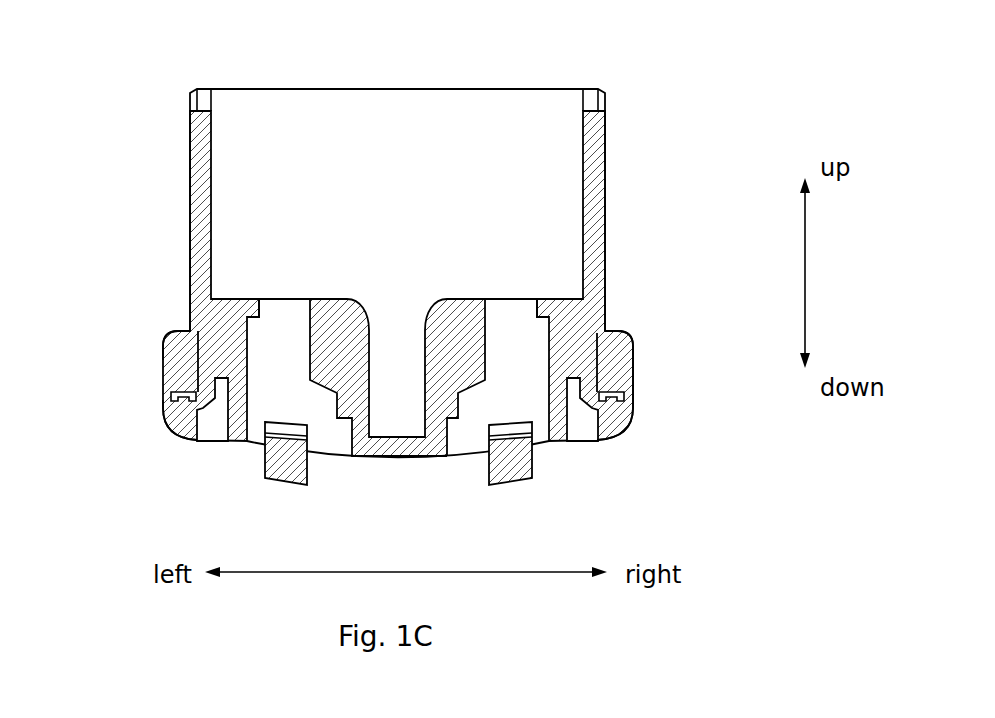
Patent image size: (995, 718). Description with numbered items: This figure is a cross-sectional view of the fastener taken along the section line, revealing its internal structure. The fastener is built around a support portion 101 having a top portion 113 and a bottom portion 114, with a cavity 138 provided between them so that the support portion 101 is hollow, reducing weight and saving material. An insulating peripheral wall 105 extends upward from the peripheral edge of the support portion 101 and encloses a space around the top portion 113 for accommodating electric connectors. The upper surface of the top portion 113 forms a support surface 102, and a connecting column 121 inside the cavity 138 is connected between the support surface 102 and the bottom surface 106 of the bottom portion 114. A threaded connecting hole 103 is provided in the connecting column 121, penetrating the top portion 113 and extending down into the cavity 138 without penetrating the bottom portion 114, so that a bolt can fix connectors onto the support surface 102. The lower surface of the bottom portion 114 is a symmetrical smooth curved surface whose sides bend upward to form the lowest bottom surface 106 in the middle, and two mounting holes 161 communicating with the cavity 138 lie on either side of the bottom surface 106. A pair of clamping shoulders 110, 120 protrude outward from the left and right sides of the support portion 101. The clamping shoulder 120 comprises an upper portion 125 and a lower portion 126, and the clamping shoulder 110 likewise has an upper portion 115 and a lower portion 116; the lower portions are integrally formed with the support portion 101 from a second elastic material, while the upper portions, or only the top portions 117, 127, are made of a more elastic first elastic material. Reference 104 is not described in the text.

The insulating peripheral wall 105 is at (374, 120).
The support portion 101 is at (217, 362).
The support surface 102 is at (245, 300).
The top portion 113 is at (230, 310).
The connecting hole 103 is at (397, 423).
The connecting column 121 is at (460, 370).
The bottom portion 114 is at (373, 450).
The clamping shoulder 110 is at (178, 348).
The top portion 117 is at (188, 335).
The upper portion 115 is at (175, 379).
The lower portion 116 is at (175, 410).
The clamping shoulder 120 is at (615, 348).
The top portion 127 is at (603, 333).
The upper portion 125 is at (633, 382).
The lower portion 126 is at (627, 413).
The bottom surface 106 is at (427, 457).
The mounting holes 161 is at (255, 437).
The tooth 104 is at (280, 475).
The cavity 138 is at (503, 333).